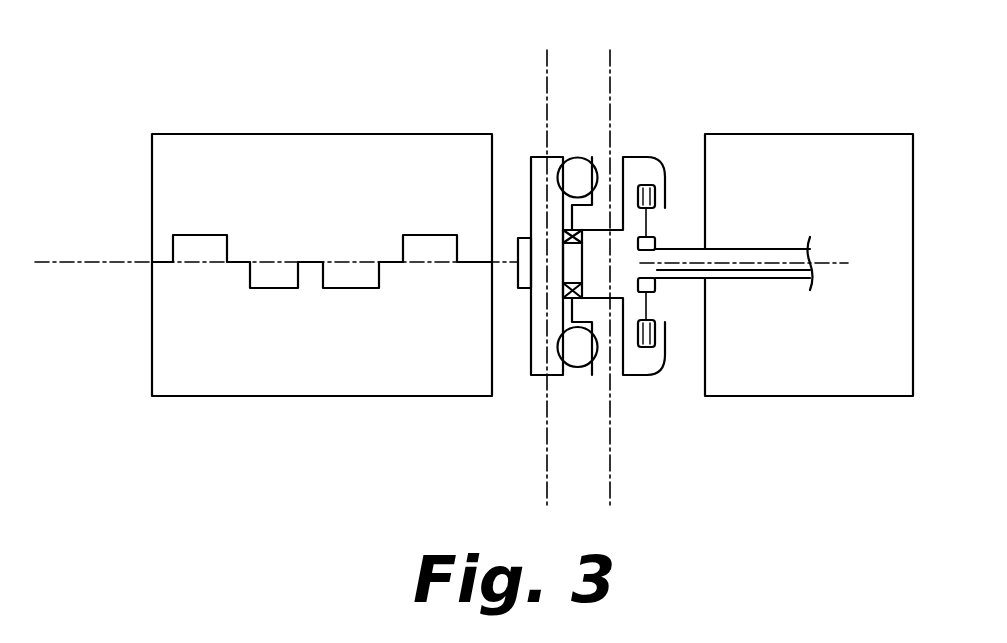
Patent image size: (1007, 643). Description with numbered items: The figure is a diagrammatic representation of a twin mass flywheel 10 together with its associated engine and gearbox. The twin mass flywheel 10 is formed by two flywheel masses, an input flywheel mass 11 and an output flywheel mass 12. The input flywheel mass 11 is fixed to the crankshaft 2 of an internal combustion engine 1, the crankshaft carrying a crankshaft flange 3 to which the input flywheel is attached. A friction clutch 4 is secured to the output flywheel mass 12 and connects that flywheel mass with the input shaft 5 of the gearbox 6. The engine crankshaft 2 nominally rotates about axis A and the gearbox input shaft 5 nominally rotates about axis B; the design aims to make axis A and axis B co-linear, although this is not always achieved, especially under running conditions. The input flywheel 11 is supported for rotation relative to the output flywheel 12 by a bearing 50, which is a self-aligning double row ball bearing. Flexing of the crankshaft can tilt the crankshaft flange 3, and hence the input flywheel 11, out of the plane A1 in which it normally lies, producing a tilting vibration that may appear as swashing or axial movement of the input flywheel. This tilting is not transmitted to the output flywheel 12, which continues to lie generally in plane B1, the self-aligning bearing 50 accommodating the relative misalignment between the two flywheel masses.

The internal combustion engine 1 is at (204, 142).
The crankshaft 2 is at (270, 290).
The crankshaft flange 3 is at (518, 238).
The friction clutch 4 is at (657, 157).
The input shaft 5 is at (688, 280).
The gearbox 6 is at (806, 335).
The twin mass flywheel 10 is at (525, 327).
The input flywheel mass 11 is at (535, 375).
The output flywheel mass 12 is at (611, 373).
The bearing 50 is at (563, 230).
The axis A is at (82, 264).
The axis B is at (823, 263).
The plane A1 is at (547, 80).
The plane B1 is at (610, 80).